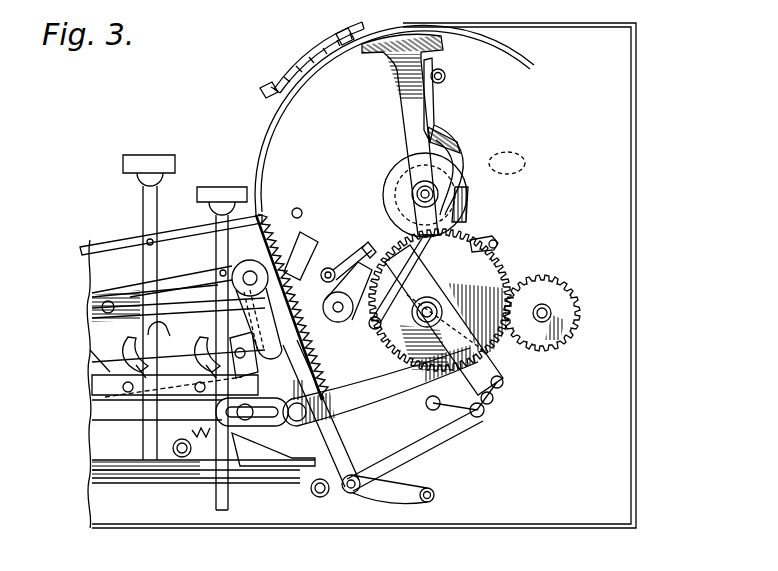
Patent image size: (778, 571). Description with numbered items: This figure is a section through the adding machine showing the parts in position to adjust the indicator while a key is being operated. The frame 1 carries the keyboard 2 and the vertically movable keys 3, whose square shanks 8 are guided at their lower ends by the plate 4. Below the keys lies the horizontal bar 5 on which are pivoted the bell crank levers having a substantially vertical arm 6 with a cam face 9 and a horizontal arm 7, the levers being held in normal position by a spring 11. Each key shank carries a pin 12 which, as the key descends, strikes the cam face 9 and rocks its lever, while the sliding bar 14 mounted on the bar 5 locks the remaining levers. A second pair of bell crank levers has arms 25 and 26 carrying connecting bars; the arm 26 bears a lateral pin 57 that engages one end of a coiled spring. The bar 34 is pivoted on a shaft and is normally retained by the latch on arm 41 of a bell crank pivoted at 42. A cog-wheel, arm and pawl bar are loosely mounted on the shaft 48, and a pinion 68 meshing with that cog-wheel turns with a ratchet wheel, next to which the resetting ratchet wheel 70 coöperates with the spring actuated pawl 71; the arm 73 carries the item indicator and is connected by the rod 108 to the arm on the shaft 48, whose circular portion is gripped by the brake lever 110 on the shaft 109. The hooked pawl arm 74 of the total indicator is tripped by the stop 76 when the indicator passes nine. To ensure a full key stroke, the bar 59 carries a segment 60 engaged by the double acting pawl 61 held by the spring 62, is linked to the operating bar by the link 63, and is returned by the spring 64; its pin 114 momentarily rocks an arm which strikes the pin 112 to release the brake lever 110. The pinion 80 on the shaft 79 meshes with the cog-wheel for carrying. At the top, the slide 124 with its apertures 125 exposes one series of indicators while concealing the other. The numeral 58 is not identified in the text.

The frame 1 is at (631, 386).
The keyboard 2 is at (88, 246).
The key 3 is at (150, 160).
The plate 4 is at (217, 460).
The horizontal bar 5 is at (110, 388).
The bell crank lever arm 6 is at (132, 346).
The bell crank lever arm 7 is at (92, 360).
The key shank 8 is at (213, 246).
The cam face 9 is at (159, 331).
The spring 11 is at (93, 368).
The pin 12 is at (138, 336).
The sliding bar 14 is at (322, 258).
The bell crank lever arm 25 is at (138, 300).
The bell crank lever arm 26 is at (242, 323).
The bar 34 is at (302, 278).
The bell crank arm 41 is at (240, 455).
The pivot 42 is at (220, 420).
The shaft 48 is at (482, 282).
The lateral pin 57 is at (290, 318).
The stop 58 is at (490, 238).
The bar 59 is at (412, 344).
The segment 60 is at (413, 442).
The double acting pawl 61 is at (318, 498).
The spring 62 is at (385, 490).
The link 63 is at (250, 440).
The spring 64 is at (280, 235).
The pinion 68 is at (462, 178).
The resetting ratchet wheel 70 is at (464, 168).
The spring actuated pawl 71 is at (458, 170).
The arm 73 is at (400, 97).
The pawl arm 74 is at (452, 118).
The stop 76 is at (446, 76).
The shaft 79 is at (544, 306).
The pinion 80 is at (572, 296).
The rod 108 is at (418, 262).
The shaft 109 is at (370, 297).
The brake lever 110 is at (350, 250).
The pin 112 is at (385, 290).
The pin 114 is at (352, 330).
The slide 124 is at (325, 27).
The aperture 125 is at (300, 60).